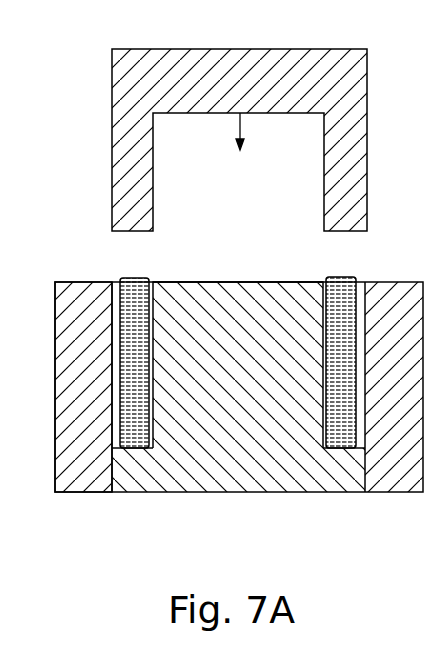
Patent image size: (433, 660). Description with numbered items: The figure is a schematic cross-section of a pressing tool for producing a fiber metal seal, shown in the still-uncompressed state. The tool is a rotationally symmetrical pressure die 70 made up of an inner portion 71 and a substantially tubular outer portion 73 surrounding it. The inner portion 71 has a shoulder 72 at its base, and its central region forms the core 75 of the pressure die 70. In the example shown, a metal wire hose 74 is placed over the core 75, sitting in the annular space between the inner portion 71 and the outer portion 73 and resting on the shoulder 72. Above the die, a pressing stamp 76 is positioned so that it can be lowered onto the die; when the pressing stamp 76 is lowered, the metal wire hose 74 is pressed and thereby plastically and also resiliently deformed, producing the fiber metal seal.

The pressure die 70 is at (219, 364).
The inner portion 71 is at (293, 470).
The shoulder 72 is at (161, 466).
The outer portion 73 is at (85, 470).
The metal wire hose 74 is at (133, 283).
The core 75 is at (237, 270).
The pressing stamp 76 is at (217, 65).